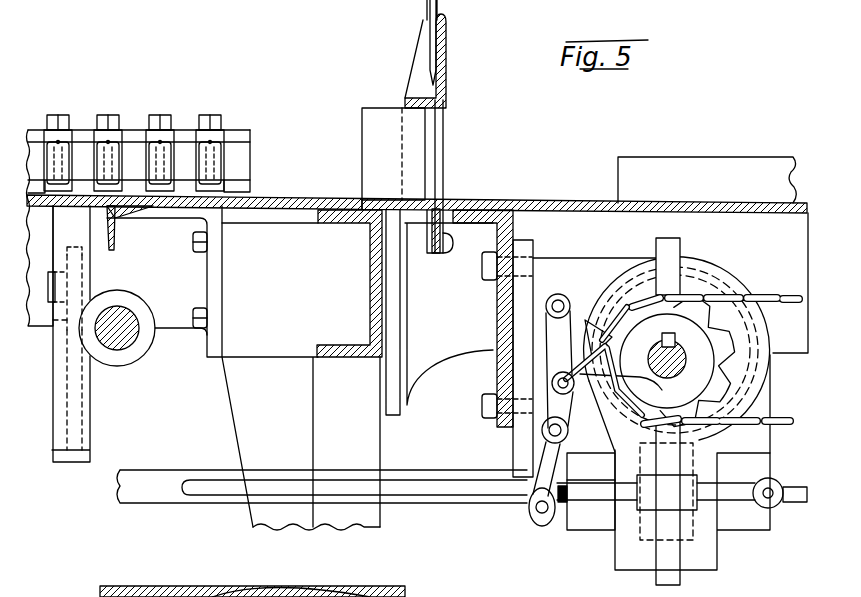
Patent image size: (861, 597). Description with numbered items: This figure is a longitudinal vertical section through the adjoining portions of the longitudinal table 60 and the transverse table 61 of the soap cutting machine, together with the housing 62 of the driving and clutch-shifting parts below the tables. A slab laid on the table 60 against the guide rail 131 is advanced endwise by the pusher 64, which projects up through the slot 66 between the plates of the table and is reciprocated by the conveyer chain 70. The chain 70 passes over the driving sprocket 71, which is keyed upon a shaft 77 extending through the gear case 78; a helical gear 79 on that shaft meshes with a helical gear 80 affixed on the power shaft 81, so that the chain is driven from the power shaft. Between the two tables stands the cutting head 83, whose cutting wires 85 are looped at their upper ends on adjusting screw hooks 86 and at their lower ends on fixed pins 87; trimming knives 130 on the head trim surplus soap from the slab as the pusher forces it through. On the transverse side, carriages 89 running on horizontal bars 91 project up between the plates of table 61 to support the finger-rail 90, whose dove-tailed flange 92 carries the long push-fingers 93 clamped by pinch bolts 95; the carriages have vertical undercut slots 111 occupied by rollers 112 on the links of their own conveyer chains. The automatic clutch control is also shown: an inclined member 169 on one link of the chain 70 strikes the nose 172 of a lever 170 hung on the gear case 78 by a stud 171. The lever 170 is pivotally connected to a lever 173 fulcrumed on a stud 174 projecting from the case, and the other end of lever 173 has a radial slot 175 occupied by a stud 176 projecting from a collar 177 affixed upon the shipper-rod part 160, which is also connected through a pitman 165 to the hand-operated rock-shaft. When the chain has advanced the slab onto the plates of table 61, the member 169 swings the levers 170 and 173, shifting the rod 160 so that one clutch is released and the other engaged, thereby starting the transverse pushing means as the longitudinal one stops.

The table 60 is at (570, 200).
The transverse table 61 is at (268, 195).
The housing 62 is at (250, 448).
The pusher 64 is at (193, 592).
The slot 66 is at (297, 592).
The conveyer chain 70 is at (777, 294).
The driving sprocket 71 is at (718, 394).
The shaft 77 is at (683, 360).
The gear case 78 is at (621, 563).
The helical gear 79 is at (706, 277).
The helical gear 80 is at (693, 540).
The power shaft 81 is at (143, 495).
The cutting head 83 is at (447, 56).
The cutting wires 85 is at (446, 120).
The adjusting screw hooks 86 is at (428, 45).
The fixed pins 87 is at (452, 236).
The carriages 89 is at (91, 445).
The finger-rail 90 is at (185, 130).
The horizontal bars 91 is at (126, 335).
The dove-tailed flange 92 is at (135, 148).
The long push-fingers 93 is at (233, 155).
The pinch bolts 95 is at (60, 122).
The vertical undercut slots 111 is at (90, 383).
The rollers 112 is at (90, 270).
The trimming knives 130 is at (368, 145).
The rail 131 is at (710, 163).
The shipper-rod part 160 is at (396, 480).
The pitman 165 is at (797, 486).
The inclined member 169 is at (593, 340).
The lever 170 is at (551, 356).
The stud 171 is at (558, 295).
The nose 172 is at (667, 370).
The lever 173 is at (537, 460).
The stud 174 is at (542, 432).
The radial slot 175 is at (560, 467).
The stud 176 is at (544, 527).
The collar 177 is at (520, 490).